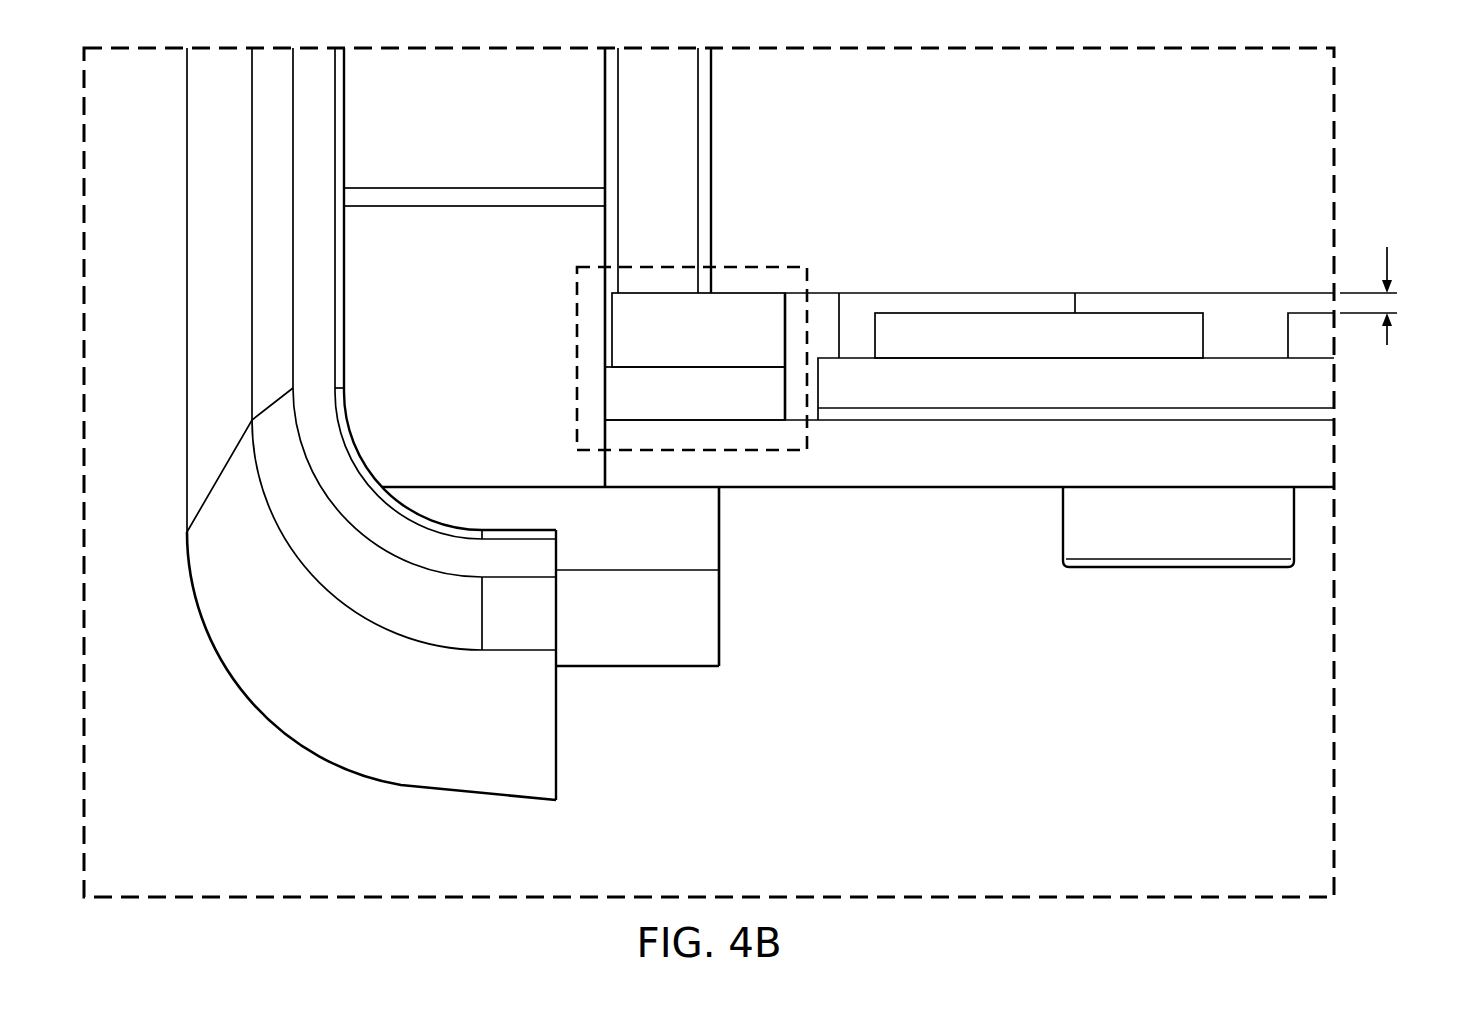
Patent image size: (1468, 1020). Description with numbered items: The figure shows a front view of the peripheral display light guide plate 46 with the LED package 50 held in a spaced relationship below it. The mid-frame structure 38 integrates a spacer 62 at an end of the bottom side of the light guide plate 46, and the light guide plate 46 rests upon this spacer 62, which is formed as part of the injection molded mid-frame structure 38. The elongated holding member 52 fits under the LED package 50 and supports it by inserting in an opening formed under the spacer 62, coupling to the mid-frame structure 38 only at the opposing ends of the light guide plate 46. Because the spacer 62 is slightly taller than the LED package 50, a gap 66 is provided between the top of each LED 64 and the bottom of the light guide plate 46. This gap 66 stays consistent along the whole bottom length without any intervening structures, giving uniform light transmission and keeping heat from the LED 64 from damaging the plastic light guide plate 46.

The mid-frame structure 38 is at (666, 694).
The light guide plate 46 is at (1008, 183).
The LED package 50 is at (1255, 368).
The elongated holding member 52 is at (910, 475).
The spacer 62 is at (623, 388).
The LED 64 is at (1148, 323).
The gap 66 is at (1388, 265).